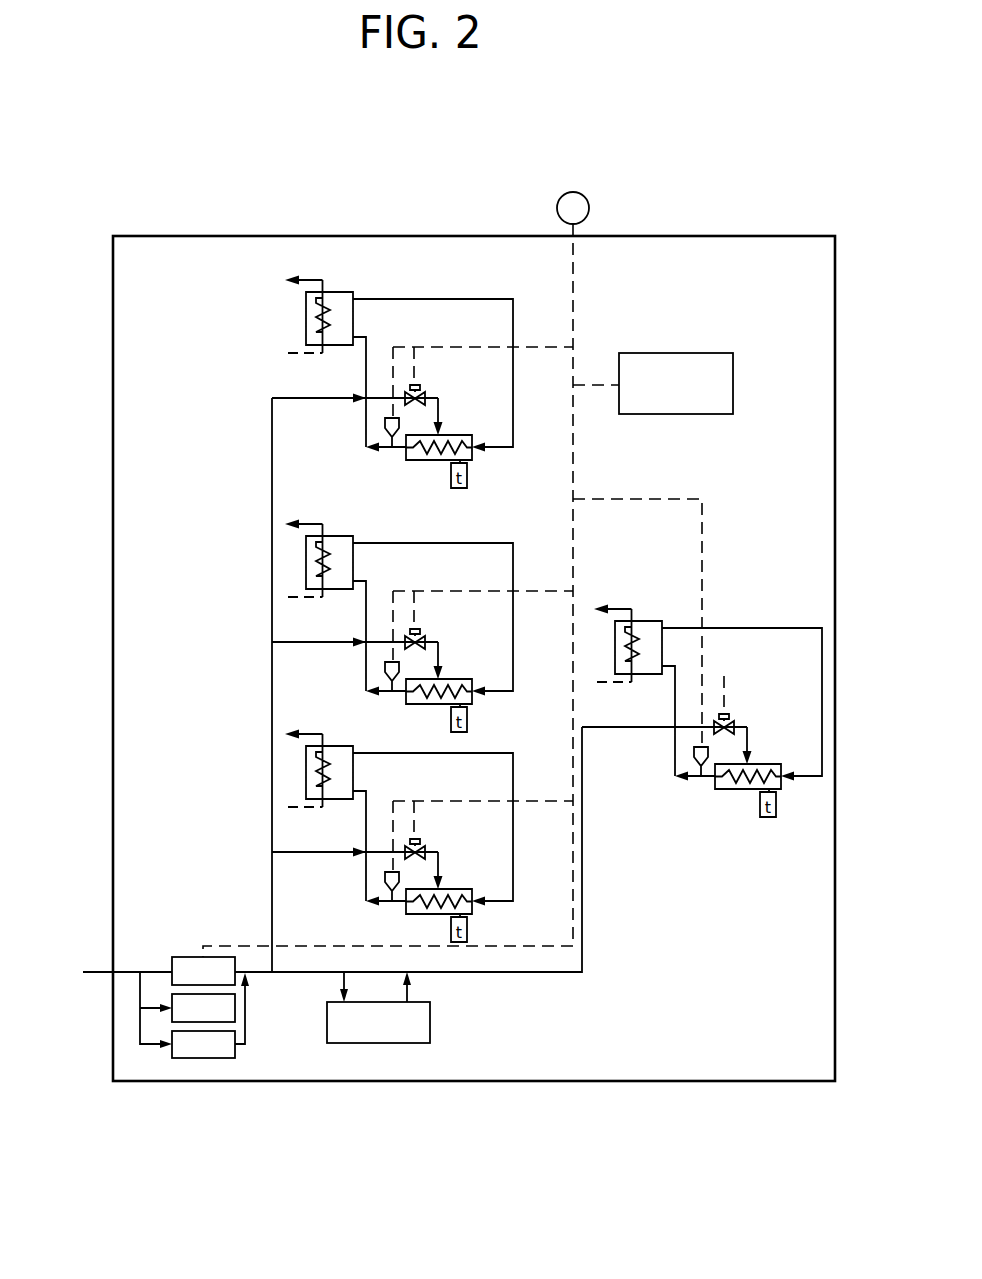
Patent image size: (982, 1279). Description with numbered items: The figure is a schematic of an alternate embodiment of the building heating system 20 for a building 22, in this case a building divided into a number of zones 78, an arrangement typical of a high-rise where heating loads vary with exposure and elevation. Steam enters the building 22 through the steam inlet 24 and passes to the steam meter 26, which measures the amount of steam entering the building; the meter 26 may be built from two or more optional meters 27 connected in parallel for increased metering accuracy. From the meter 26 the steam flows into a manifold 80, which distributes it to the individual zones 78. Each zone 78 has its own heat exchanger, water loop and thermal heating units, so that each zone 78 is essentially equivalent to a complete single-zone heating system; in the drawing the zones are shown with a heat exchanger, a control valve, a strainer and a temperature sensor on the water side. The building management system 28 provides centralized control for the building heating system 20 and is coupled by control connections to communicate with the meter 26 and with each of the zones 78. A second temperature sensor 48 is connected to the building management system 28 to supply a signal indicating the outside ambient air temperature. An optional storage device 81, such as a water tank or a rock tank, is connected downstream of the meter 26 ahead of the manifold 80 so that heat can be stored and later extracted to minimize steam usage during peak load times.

The building heating system 20 is at (316, 213).
The building 22 is at (113, 357).
The steam inlet 24 is at (96, 971).
The steam meter 26 is at (197, 957).
The optional meters 27 is at (236, 1053).
The building management system 28 is at (734, 353).
The second temperature sensor 48 is at (588, 203).
The zone 78 is at (699, 794).
The manifold 80 is at (271, 837).
The storage device 81 is at (430, 1021).